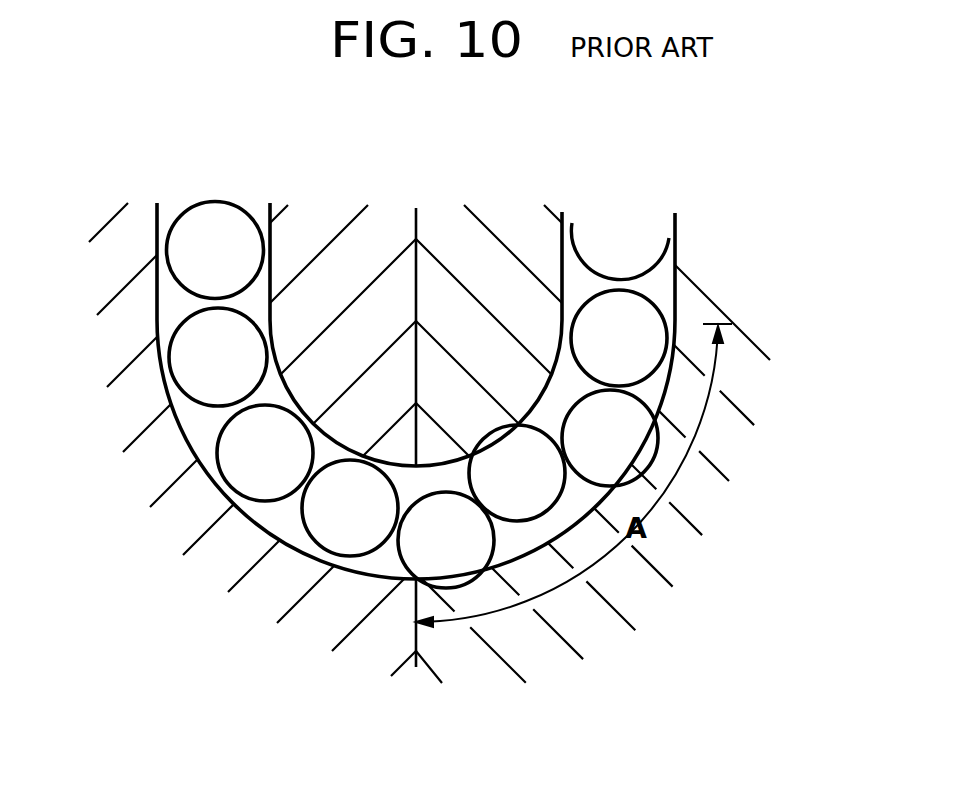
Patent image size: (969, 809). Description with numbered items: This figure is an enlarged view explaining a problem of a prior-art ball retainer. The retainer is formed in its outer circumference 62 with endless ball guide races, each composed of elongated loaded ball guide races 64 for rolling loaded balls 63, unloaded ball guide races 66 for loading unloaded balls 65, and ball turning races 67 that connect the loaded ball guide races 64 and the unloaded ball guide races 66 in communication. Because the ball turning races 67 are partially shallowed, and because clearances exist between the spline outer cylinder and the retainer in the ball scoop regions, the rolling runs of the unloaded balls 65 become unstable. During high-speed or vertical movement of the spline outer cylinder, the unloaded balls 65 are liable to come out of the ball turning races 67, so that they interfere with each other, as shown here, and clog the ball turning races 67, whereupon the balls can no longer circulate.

The outer circumference 62 is at (509, 246).
The loaded balls 63 is at (676, 265).
The loaded ball guide races 64 is at (580, 267).
The unloaded balls 65 is at (183, 377).
The unloaded ball guide races 66 is at (267, 288).
The ball turning races 67 is at (278, 524).